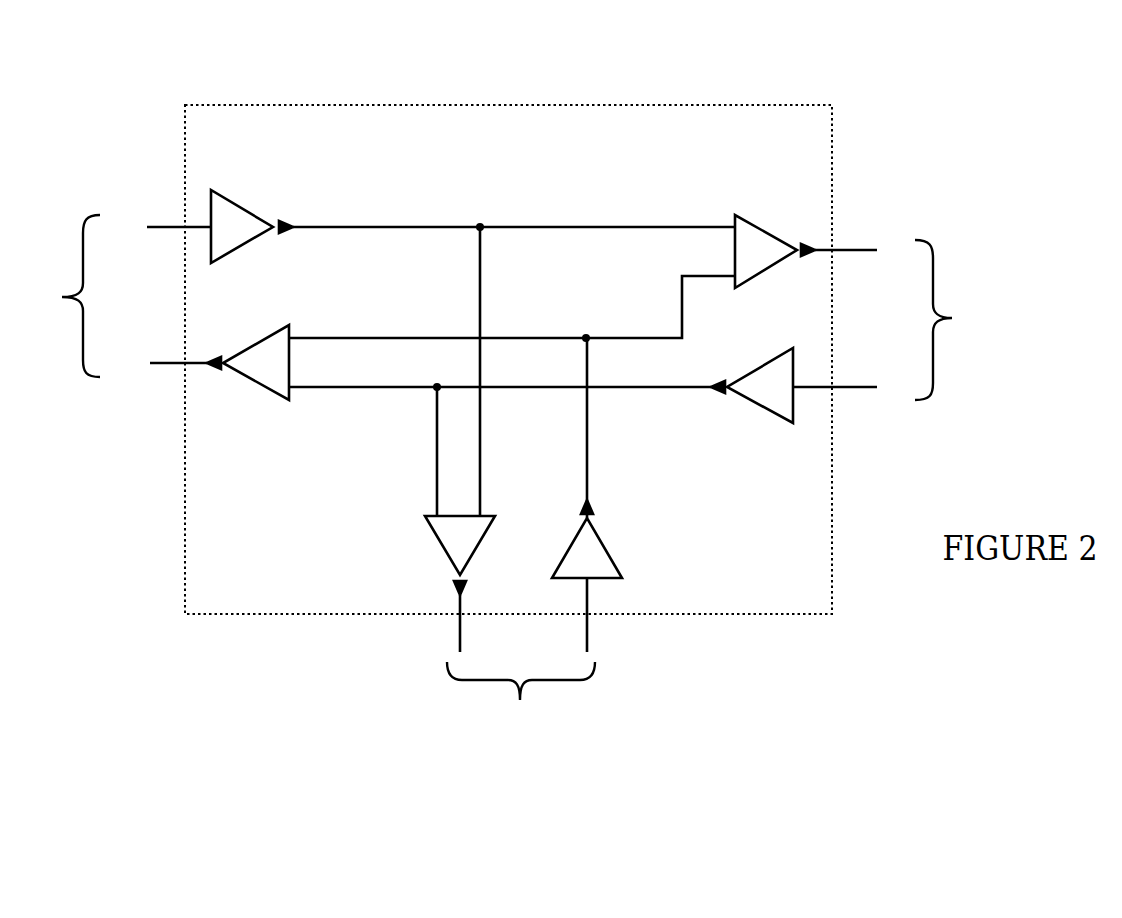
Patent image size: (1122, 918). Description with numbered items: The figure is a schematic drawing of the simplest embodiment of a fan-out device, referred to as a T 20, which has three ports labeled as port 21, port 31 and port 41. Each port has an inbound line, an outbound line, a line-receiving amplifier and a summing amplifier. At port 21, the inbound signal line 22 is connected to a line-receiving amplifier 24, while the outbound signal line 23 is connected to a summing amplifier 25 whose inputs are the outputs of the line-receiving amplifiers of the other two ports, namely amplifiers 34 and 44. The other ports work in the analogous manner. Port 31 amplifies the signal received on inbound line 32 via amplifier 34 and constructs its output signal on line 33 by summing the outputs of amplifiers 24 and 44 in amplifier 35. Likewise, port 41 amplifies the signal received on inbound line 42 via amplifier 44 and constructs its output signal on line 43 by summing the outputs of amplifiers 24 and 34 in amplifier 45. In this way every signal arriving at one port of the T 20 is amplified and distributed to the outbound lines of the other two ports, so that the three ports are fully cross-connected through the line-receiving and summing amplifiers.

The T 20 is at (352, 104).
The port 21 is at (58, 296).
The inbound signal line 22 is at (162, 229).
The outbound signal line 23 is at (155, 364).
The line-receiving amplifier 24 is at (250, 211).
The summing amplifier 25 is at (256, 343).
The port 31 is at (961, 320).
The inbound line 32 is at (856, 389).
The line 33 is at (878, 253).
The amplifier 34 is at (771, 362).
The amplifier 35 is at (770, 229).
The port 41 is at (521, 702).
The inbound line 42 is at (587, 631).
The line 43 is at (460, 634).
The amplifier 44 is at (605, 552).
The amplifier 45 is at (440, 552).